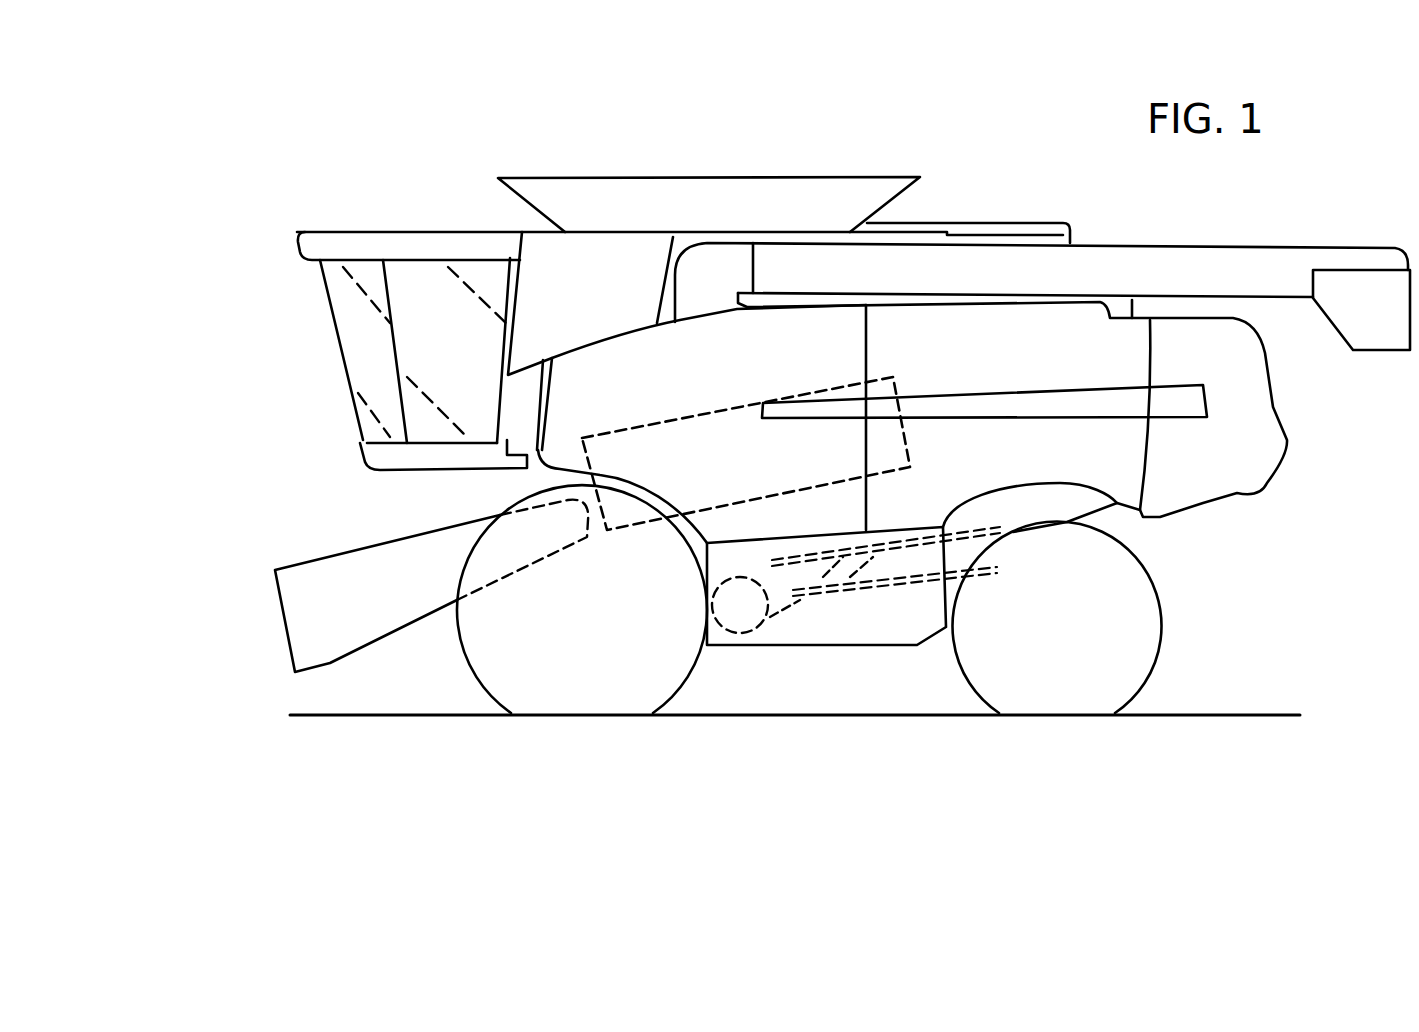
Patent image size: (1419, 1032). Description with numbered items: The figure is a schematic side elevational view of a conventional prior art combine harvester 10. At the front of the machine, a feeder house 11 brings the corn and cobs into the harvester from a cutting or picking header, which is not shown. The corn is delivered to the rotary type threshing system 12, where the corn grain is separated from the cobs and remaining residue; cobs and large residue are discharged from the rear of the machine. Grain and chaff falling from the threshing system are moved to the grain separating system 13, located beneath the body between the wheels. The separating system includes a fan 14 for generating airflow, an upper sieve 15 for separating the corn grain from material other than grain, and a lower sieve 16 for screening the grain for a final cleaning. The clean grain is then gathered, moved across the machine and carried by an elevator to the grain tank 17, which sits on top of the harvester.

The combine harvester 10 is at (313, 122).
The feeder house 11 is at (303, 562).
The rotary type threshing system 12 is at (638, 520).
The grain separating system 13 is at (884, 628).
The fan 14 is at (738, 642).
The upper sieve 15 is at (1015, 533).
The lower sieve 16 is at (927, 577).
The grain tank 17 is at (760, 177).